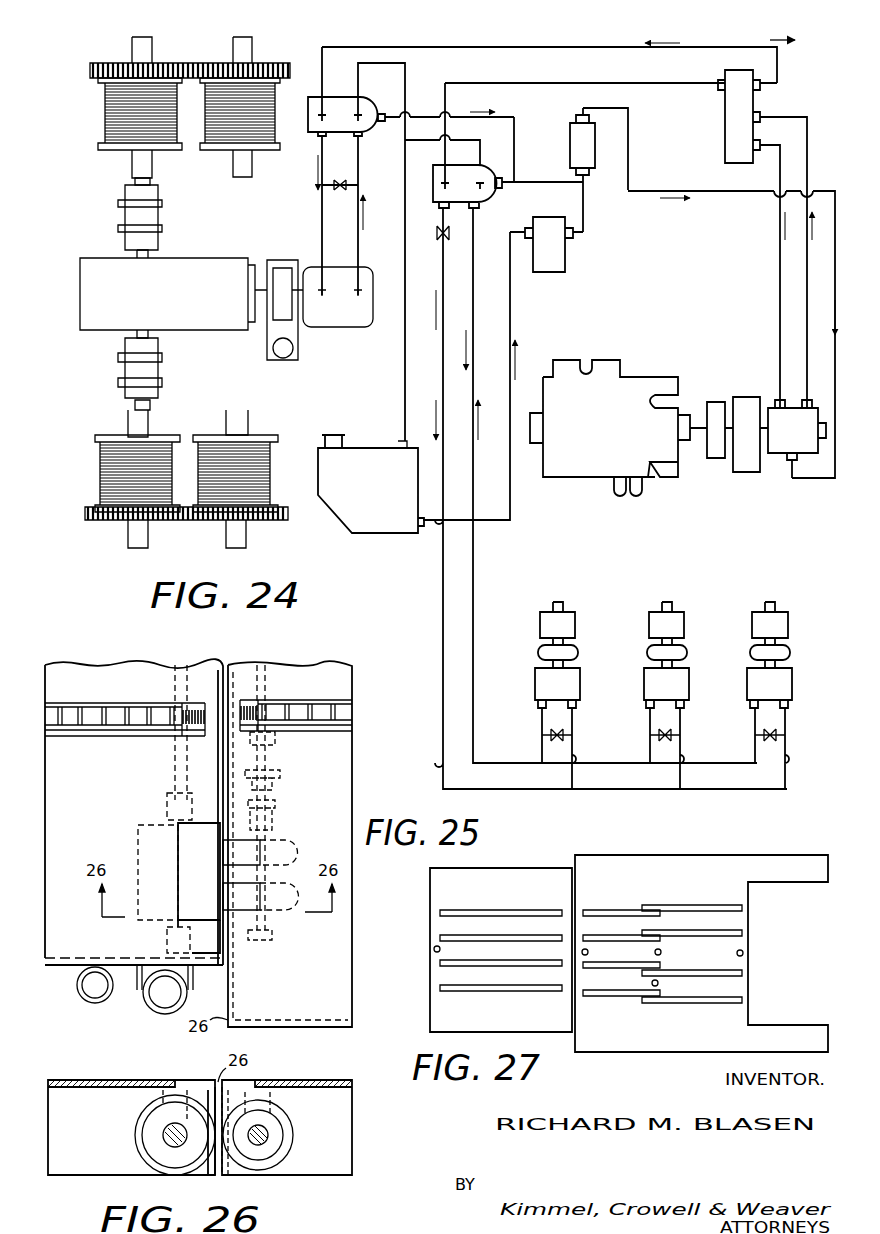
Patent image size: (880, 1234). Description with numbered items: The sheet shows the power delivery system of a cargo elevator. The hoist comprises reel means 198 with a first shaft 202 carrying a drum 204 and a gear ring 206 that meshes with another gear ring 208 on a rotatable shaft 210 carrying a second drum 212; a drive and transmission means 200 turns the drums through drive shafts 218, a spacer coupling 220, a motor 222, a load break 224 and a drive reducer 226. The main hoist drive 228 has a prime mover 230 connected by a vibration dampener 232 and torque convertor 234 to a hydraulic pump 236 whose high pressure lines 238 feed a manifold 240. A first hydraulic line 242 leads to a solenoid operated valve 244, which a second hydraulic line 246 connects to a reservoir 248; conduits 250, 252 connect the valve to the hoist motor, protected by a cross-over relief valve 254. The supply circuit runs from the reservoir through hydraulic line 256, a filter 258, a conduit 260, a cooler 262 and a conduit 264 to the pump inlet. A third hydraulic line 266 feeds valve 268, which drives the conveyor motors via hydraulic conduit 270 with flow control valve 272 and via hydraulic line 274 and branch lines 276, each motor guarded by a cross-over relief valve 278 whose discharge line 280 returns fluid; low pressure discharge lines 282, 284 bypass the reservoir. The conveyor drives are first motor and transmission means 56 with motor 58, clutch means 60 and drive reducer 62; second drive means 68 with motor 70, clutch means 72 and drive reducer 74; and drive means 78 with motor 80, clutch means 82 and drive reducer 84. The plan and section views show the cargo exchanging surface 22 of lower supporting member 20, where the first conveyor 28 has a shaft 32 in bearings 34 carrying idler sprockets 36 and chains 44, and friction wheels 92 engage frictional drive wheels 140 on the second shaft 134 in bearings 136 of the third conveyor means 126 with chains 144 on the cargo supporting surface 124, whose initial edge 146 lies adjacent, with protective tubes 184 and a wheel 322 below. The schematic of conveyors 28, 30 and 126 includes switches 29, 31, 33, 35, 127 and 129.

In FIG. 24, the reel means 198 is at (86, 66).
In FIG. 24, the drive and transmission means 200 is at (224, 266).
In FIG. 24, the first shaft 202 is at (132, 45).
In FIG. 24, the drum 204 is at (110, 105).
In FIG. 24, the gear ring 206 is at (164, 70).
In FIG. 24, the gear ring 208 is at (218, 70).
In FIG. 24, the rotatable shaft 210 is at (252, 45).
In FIG. 24, the second drum 212 is at (270, 112).
In FIG. 24, the drive shafts 218 is at (135, 181).
In FIG. 24, the spacer coupling 220 is at (127, 210).
In FIG. 24, the motor 222 is at (350, 318).
In FIG. 24, the load break 224 is at (280, 275).
In FIG. 24, the drive reducer 226 is at (180, 268).
In FIG. 24, the main hoist drive 228 is at (790, 86).
In FIG. 24, the prime mover 230 is at (625, 374).
In FIG. 24, the vibration dampener 232 is at (712, 402).
In FIG. 24, the torque convertor 234 is at (745, 398).
In FIG. 24, the hydraulic pump 236 is at (790, 458).
In FIG. 24, the high pressure hydraulic lines 238 is at (780, 290).
In FIG. 24, the manifold 240 is at (725, 110).
In FIG. 24, the first hydraulic line 242 is at (510, 48).
In FIG. 24, the solenoid operated valve 244 is at (345, 100).
In FIG. 24, the second hydraulic line 246 is at (405, 80).
In FIG. 24, the reservoir 248 is at (350, 450).
In FIG. 24, the hydraulic conduit 250 is at (358, 212).
In FIG. 24, the hydraulic conduit 252 is at (322, 225).
In FIG. 24, the cross-over relief valve 254 is at (345, 178).
In FIG. 24, the hydraulic line 256 is at (512, 306).
In FIG. 24, the filter 258 is at (565, 255).
In FIG. 24, the conduit 260 is at (583, 208).
In FIG. 24, the cooler 262 is at (570, 132).
In FIG. 24, the hydraulic conduit 264 is at (705, 190).
In FIG. 24, the third hydraulic line 266 is at (588, 84).
In FIG. 24, the valve 268 is at (458, 206).
In FIG. 24, the hydraulic conduit 270 is at (440, 306).
In FIG. 24, the flow control valve 272 is at (438, 230).
In FIG. 24, the hydraulic line 274 is at (470, 392).
In FIG. 24, the branch lines 276 is at (542, 737).
In FIG. 24, the cross-over relief valve 278 is at (542, 730).
In FIG. 24, the discharge line 280 is at (470, 140).
In FIG. 24, the low pressure discharge line 282 is at (510, 114).
In FIG. 24, the low pressure discharge line 284 is at (528, 182).
In FIG. 24, the first motor and transmission means 56 is at (644, 620).
In FIG. 24, the motor 58 is at (644, 685).
In FIG. 24, the clutch means 60 is at (647, 652).
In FIG. 24, the drive reducer 62 is at (649, 626).
In FIG. 24, the second drive and transmission means 68 is at (750, 620).
In FIG. 24, the motor 70 is at (747, 685).
In FIG. 24, the clutch means 72 is at (750, 652).
In FIG. 24, the drive reducer 74 is at (752, 626).
In FIG. 24, the drive means 78 is at (532, 620).
In FIG. 24, the motor 80 is at (535, 685).
In FIG. 24, the clutch means 82 is at (538, 652).
In FIG. 24, the drive reducer 84 is at (540, 626).
In FIG. 25, the cargo supporting surface 124 is at (87, 764).
In FIG. 26, the cargo supporting surface 124 is at (88, 1080).
In FIG. 27, the cargo supporting surface 124 is at (552, 893).
In FIG. 25, the conveyor chains 144 is at (72, 712).
In FIG. 25, the second shaft 134 is at (175, 686).
In FIG. 26, the second shaft 134 is at (170, 1132).
In FIG. 25, the bearings 136 is at (167, 796).
In FIG. 26, the bearings 136 is at (163, 1115).
In FIG. 25, the frictional drive wheels 140 is at (190, 852).
In FIG. 26, the frictional drive wheels 140 is at (140, 1150).
In FIG. 25, the friction wheels 92 is at (228, 890).
In FIG. 26, the friction wheels 92 is at (292, 1150).
In FIG. 25, the cargo exchanging surface 22 is at (306, 989).
In FIG. 26, the cargo exchanging surface 22 is at (340, 1080).
In FIG. 27, the cargo exchanging surface 22 is at (608, 879).
In FIG. 25, the chains 44 is at (318, 712).
In FIG. 25, the first conveyor 28 is at (342, 688).
In FIG. 27, the first conveyor 28 is at (624, 910).
In FIG. 25, the shaft 32 is at (265, 687).
In FIG. 26, the shaft 32 is at (268, 1133).
In FIG. 25, the bearings 34 is at (268, 748).
In FIG. 26, the bearings 34 is at (285, 1112).
In FIG. 25, the idler sprockets 36 is at (268, 735).
In FIG. 25, the tubes 184 is at (78, 990).
In FIG. 25, the wheel 322 is at (152, 1003).
In FIG. 25, the initial edge 146 is at (222, 972).
In FIG. 26, the initial edge 146 is at (218, 1178).
In FIG. 25, the first lower supporting member 20 is at (268, 1032).
In FIG. 27, the third conveyor means 126 is at (487, 906).
In FIG. 27, the switch 127 is at (434, 949).
In FIG. 27, the switch 129 is at (573, 1052).
In FIG. 27, the second conveyor 30 is at (708, 904).
In FIG. 27, the switch 29 is at (588, 952).
In FIG. 27, the switch 31 is at (661, 952).
In FIG. 27, the switch 33 is at (658, 983).
In FIG. 27, the switch 35 is at (743, 953).